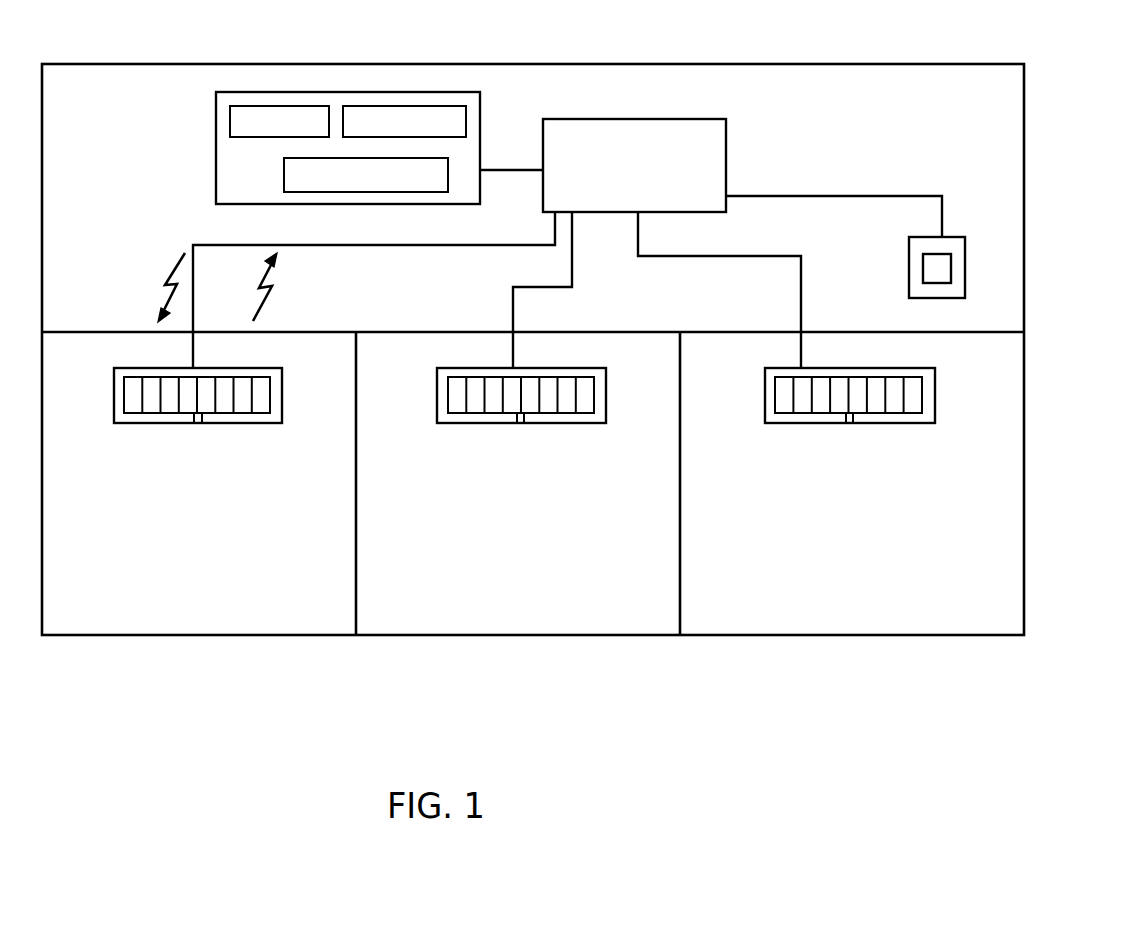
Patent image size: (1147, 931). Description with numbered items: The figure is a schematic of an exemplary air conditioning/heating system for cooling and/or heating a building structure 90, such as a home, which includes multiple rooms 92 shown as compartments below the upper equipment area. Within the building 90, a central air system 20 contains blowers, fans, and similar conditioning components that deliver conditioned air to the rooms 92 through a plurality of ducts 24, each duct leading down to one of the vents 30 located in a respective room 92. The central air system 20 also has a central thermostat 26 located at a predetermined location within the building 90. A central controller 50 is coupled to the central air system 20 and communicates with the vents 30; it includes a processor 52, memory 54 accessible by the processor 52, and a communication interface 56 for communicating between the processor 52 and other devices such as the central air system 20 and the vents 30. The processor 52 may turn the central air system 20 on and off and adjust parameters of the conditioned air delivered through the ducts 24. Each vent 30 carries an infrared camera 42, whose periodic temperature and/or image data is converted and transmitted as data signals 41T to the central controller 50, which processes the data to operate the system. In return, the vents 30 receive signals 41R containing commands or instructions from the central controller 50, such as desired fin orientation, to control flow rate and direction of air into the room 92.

The central air system 20 is at (726, 163).
The ducts 24 is at (462, 245).
The central thermostat 26 is at (909, 266).
The vents 30 is at (104, 414).
The signals 41R is at (145, 285).
The data signals 41T is at (297, 287).
The infrared camera 42 is at (198, 424).
The central controller 50 is at (214, 147).
The processor 52 is at (429, 106).
The memory 54 is at (283, 106).
The communication interface 56 is at (357, 192).
The building structure 90 is at (1044, 282).
The rooms 92 is at (186, 636).